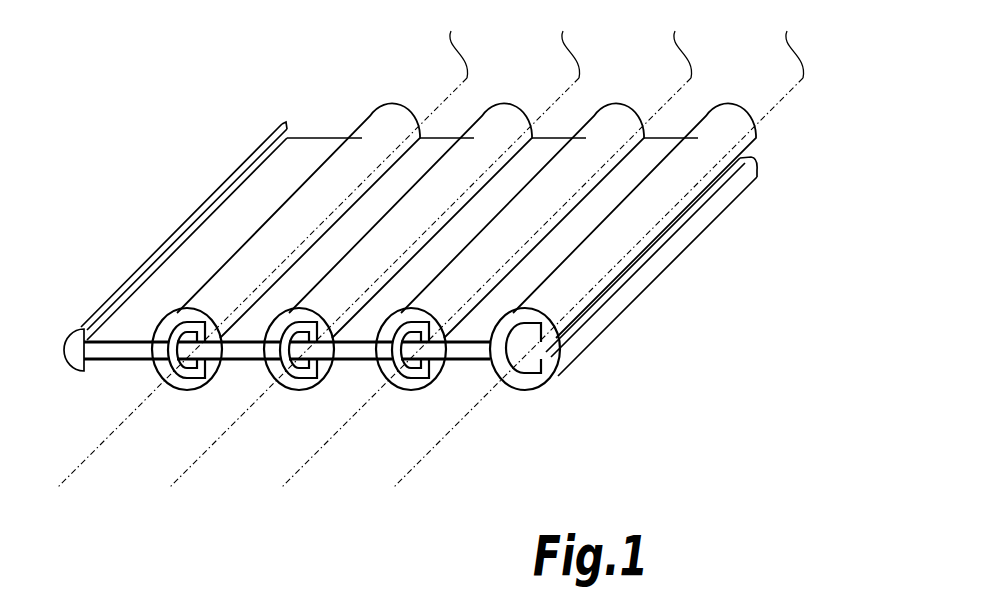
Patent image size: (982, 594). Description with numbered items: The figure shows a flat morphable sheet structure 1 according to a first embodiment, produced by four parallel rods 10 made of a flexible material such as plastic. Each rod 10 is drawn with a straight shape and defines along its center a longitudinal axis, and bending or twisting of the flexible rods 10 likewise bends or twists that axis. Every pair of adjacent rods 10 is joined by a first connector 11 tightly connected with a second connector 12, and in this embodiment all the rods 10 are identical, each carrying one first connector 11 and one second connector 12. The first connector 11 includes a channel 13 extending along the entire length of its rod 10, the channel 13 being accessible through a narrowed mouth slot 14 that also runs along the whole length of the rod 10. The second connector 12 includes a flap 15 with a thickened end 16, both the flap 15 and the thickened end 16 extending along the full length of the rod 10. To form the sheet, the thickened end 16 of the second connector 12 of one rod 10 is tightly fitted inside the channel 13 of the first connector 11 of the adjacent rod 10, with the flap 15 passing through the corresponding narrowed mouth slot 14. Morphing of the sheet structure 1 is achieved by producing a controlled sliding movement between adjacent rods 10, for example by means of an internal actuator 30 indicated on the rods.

The morphable sheet structure 1 is at (208, 68).
The rod 10 is at (466, 196).
The first connector 11 is at (357, 411).
The second connector 12 is at (410, 290).
The channel 13 is at (347, 401).
The narrowed mouth slot 14 is at (358, 394).
The flap 15 is at (293, 383).
The thickened end 16 is at (287, 391).
The internal actuator 30 is at (432, 240).